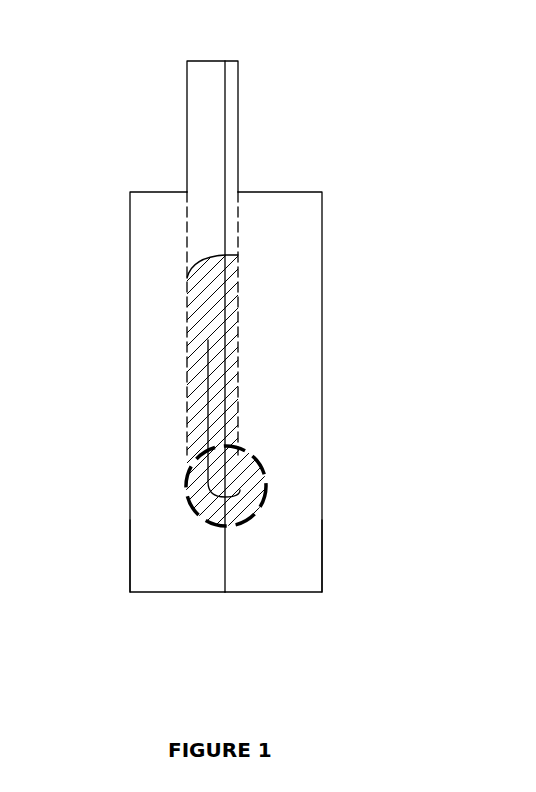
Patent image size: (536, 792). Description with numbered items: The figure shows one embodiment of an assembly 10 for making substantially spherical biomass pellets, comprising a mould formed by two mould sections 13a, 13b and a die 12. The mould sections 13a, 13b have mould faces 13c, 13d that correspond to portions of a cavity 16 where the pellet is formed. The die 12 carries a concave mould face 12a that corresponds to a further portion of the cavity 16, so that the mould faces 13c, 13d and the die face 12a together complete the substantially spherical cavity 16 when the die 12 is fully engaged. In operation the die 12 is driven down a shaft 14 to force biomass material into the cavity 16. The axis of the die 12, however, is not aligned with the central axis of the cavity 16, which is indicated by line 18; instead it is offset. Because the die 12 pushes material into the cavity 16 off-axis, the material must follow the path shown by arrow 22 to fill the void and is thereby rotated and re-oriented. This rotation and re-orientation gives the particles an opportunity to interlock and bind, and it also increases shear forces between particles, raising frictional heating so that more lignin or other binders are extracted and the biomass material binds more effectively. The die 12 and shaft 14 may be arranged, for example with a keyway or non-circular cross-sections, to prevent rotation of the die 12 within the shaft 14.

The assembly 10 is at (398, 146).
The die 12 is at (213, 107).
The concave mould face 12a is at (205, 256).
The mould section 13a is at (157, 395).
The mould section 13b is at (305, 390).
The mould face 13c is at (206, 490).
The mould face 13d is at (270, 496).
The shaft 14 is at (238, 230).
The cavity 16 is at (257, 477).
The line 18 is at (225, 147).
The arrow 22 is at (207, 427).